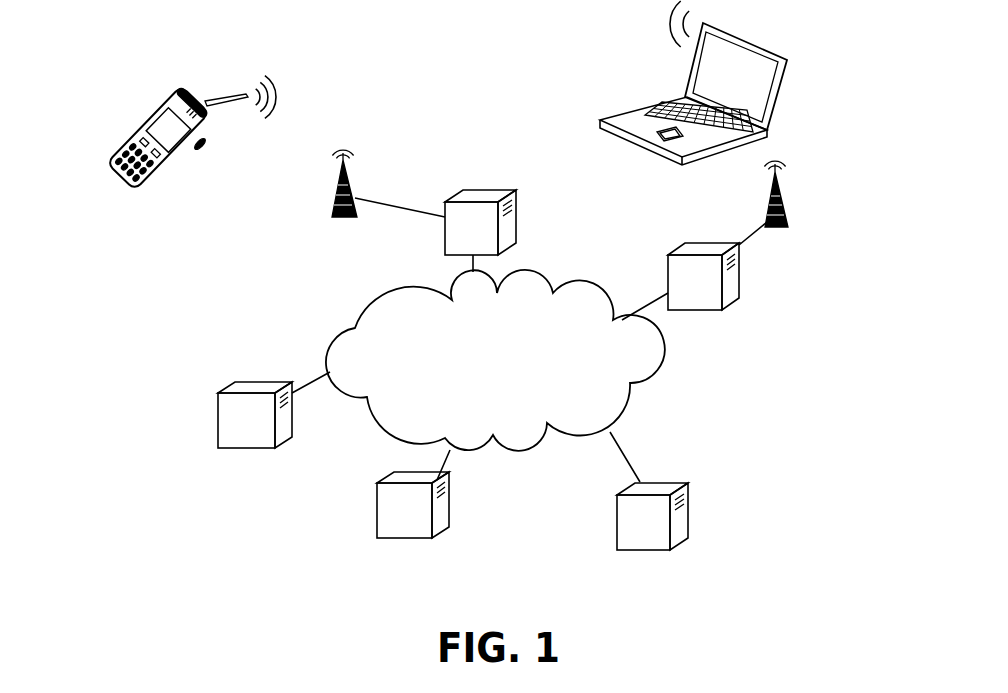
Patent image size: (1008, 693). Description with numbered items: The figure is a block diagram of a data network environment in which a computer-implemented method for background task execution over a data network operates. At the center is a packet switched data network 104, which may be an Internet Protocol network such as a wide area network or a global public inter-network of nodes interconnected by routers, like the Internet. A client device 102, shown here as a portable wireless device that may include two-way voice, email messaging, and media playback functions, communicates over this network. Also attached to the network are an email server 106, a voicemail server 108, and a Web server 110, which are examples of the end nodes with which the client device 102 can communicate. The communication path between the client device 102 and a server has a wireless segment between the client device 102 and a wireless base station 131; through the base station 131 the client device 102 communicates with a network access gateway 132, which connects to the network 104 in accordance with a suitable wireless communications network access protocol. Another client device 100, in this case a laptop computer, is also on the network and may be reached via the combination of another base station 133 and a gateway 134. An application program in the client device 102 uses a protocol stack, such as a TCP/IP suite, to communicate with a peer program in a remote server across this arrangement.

The client device 100 is at (777, 112).
The client device 102 is at (118, 145).
The packet switched data network 104 is at (662, 362).
The email server 106 is at (290, 428).
The voicemail server 108 is at (448, 512).
The Web server 110 is at (688, 520).
The wireless base station 131 is at (353, 188).
The network access gateway 132 is at (518, 226).
The base station 133 is at (785, 198).
The gateway 134 is at (740, 283).